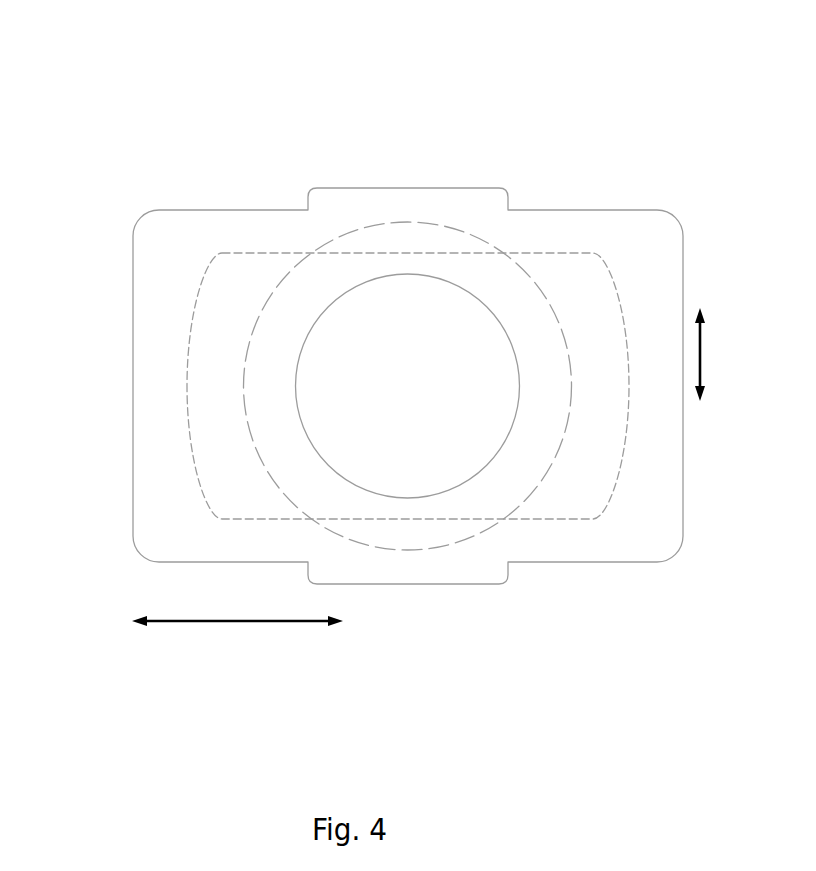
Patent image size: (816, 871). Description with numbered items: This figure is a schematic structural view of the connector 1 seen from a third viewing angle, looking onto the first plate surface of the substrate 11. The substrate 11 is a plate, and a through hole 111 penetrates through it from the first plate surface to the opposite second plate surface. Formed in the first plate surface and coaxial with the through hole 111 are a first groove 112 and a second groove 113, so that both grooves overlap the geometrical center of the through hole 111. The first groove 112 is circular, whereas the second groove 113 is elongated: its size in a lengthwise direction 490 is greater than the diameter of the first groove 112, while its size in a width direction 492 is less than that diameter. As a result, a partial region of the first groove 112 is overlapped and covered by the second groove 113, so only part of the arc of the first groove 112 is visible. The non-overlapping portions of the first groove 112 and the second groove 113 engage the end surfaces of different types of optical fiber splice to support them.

The connector 1 is at (58, 28).
The substrate 11 is at (143, 253).
The through hole 111 is at (455, 327).
The first groove 112 is at (627, 677).
The second groove 113 is at (223, 469).
The lengthwise direction 490 is at (237, 644).
The width direction 492 is at (724, 354).